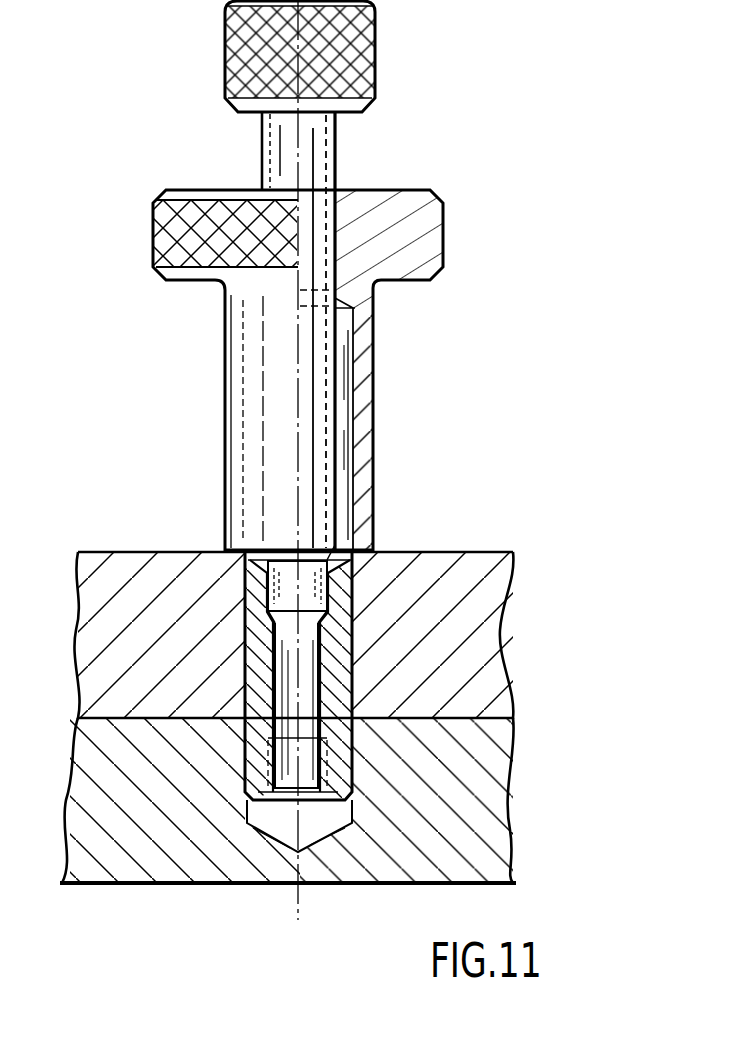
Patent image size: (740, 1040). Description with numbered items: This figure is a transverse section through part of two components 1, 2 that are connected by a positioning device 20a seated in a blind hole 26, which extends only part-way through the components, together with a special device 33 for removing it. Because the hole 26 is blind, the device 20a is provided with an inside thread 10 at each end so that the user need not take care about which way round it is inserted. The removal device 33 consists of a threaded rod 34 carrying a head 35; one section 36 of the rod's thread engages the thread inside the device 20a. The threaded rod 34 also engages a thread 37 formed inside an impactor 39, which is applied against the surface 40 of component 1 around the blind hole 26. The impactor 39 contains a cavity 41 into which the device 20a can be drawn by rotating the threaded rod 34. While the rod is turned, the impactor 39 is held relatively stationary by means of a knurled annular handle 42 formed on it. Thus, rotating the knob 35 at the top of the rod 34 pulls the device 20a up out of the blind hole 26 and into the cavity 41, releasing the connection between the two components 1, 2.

The component 1 is at (113, 572).
The component 2 is at (142, 868).
The inside thread 10 is at (320, 590).
The device 20a is at (333, 662).
The hole 26 is at (352, 700).
The device 33 is at (373, 430).
The threaded rod 34 is at (337, 144).
The head 35 is at (362, 56).
The section of thread 36 is at (320, 546).
The thread 37 is at (330, 231).
The impactor 39 is at (415, 252).
The surface 40 is at (173, 553).
The cavity 41 is at (345, 373).
The knurled annular handle 42 is at (190, 252).